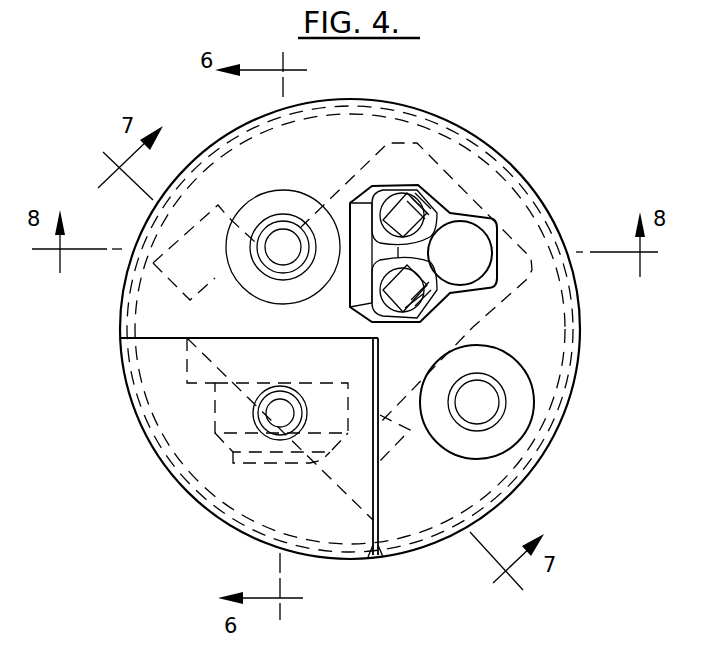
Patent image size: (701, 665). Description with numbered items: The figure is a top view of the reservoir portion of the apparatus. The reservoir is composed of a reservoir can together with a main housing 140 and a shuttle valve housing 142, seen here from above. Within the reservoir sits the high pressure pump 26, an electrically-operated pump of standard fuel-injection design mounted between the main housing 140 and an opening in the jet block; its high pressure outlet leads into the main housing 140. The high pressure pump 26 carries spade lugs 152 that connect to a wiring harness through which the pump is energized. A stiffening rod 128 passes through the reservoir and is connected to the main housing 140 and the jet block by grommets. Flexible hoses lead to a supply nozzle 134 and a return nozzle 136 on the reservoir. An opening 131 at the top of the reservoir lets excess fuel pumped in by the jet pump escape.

The high pressure pump 26 is at (473, 243).
The stiffening rod 128 is at (480, 407).
The opening 131 is at (433, 204).
The supply nozzle 134 is at (283, 250).
The return nozzle 136 is at (282, 410).
The main housing 140 is at (418, 520).
The shuttle valve housing 142 is at (205, 470).
The spade lugs 152 is at (398, 213).